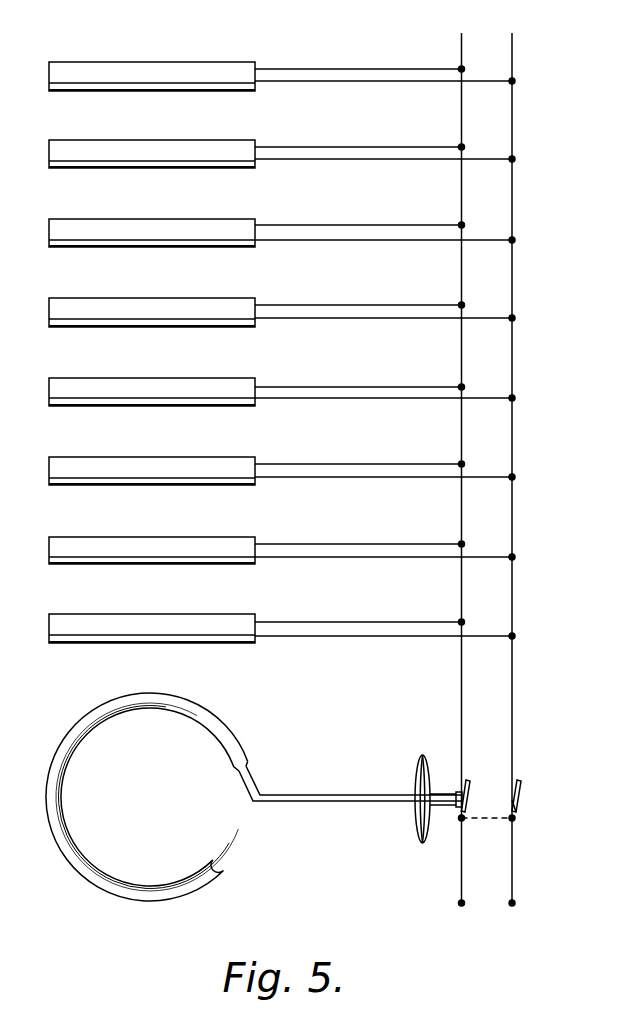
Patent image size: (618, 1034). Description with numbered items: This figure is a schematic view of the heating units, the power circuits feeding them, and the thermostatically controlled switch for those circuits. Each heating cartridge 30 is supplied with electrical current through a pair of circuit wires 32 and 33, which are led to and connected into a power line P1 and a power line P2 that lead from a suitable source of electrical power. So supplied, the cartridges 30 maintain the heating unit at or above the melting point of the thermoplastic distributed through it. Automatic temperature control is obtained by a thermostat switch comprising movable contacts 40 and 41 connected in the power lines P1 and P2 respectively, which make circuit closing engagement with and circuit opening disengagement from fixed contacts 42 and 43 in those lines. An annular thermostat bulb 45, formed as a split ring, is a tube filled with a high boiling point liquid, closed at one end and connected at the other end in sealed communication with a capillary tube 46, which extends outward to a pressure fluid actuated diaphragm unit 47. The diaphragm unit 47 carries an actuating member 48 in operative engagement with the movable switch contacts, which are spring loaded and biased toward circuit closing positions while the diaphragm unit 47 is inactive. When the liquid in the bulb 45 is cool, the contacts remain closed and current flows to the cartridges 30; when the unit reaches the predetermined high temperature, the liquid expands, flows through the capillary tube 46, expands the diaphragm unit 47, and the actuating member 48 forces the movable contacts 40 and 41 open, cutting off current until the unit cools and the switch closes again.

The heating cartridge 30 is at (53, 73).
The circuit wire 32 is at (344, 68).
The circuit wire 33 is at (398, 83).
The power line P1 is at (465, 34).
The power line P2 is at (512, 34).
The movable contact 40 is at (467, 812).
The movable contact 41 is at (519, 810).
The fixed contact 42 is at (462, 781).
The fixed contact 43 is at (513, 782).
The thermostat bulb 45 is at (212, 713).
The capillary tube 46 is at (318, 802).
The diaphragm unit 47 is at (406, 806).
The actuating member 48 is at (443, 808).